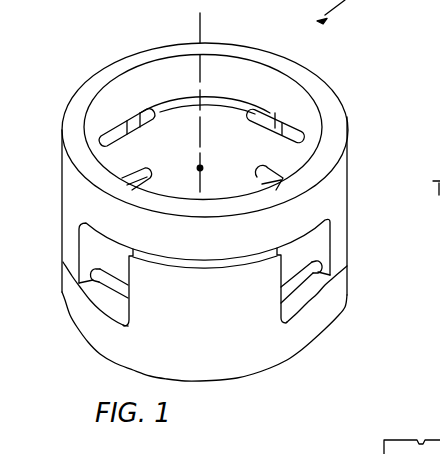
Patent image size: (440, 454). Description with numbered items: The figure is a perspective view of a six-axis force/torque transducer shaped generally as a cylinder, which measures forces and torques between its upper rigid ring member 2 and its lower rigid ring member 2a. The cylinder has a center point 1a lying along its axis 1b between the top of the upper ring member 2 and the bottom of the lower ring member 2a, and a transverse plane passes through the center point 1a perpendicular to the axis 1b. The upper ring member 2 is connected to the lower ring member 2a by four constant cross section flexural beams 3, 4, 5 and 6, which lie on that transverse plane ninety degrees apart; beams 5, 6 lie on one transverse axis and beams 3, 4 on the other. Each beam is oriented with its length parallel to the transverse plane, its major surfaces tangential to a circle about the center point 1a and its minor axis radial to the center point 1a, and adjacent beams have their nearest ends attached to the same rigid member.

The center point 1a is at (202, 166).
The axis 1b is at (200, 25).
The upper rigid ring member 2 is at (77, 103).
The lower rigid ring member 2a is at (203, 369).
The flexural beam 3 is at (125, 155).
The flexural beam 4 is at (297, 255).
The flexural beam 5 is at (277, 153).
The flexural beam 6 is at (102, 253).